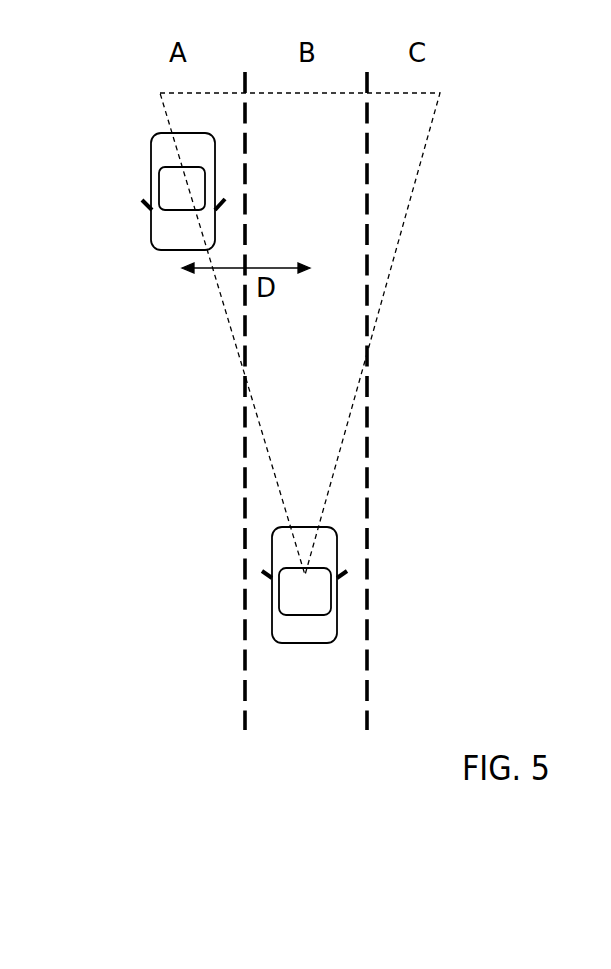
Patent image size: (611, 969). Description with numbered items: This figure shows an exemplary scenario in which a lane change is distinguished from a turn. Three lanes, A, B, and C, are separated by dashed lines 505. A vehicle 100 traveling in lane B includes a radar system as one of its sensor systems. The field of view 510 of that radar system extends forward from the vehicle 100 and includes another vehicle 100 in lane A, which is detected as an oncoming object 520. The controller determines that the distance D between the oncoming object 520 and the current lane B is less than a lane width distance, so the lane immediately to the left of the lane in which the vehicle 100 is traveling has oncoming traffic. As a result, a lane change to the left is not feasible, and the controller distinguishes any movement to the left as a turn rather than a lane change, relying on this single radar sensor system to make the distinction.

The vehicle 100 is at (290, 643).
The dashed lines 505 is at (243, 683).
The field of view 510 is at (412, 192).
The oncoming object 520 is at (152, 228).